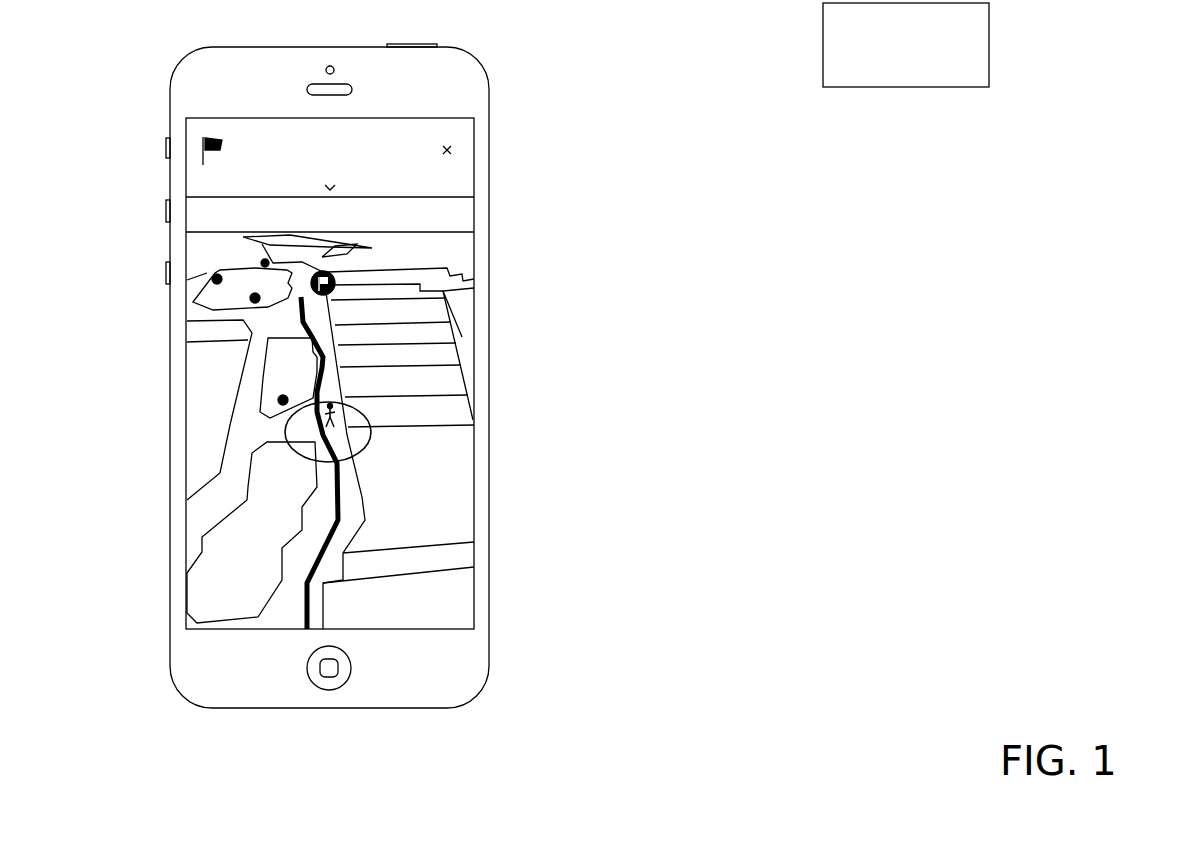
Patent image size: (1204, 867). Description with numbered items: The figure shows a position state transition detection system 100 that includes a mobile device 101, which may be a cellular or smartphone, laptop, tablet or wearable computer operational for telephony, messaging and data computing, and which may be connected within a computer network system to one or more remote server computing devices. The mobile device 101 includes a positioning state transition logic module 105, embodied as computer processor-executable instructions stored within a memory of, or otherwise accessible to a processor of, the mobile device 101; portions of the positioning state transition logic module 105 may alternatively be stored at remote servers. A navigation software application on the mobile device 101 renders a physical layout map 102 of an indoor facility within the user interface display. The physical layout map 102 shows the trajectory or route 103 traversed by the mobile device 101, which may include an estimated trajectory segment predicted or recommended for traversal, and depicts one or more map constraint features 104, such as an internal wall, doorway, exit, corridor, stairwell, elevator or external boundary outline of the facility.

The position state transition detection system 100 is at (1193, 85).
The mobile device 101 is at (429, 88).
The physical layout map 102 is at (413, 613).
The trajectory or route 103 is at (345, 497).
The map constraint feature 104 is at (458, 336).
The positioning state transition logic module 105 is at (485, 158).